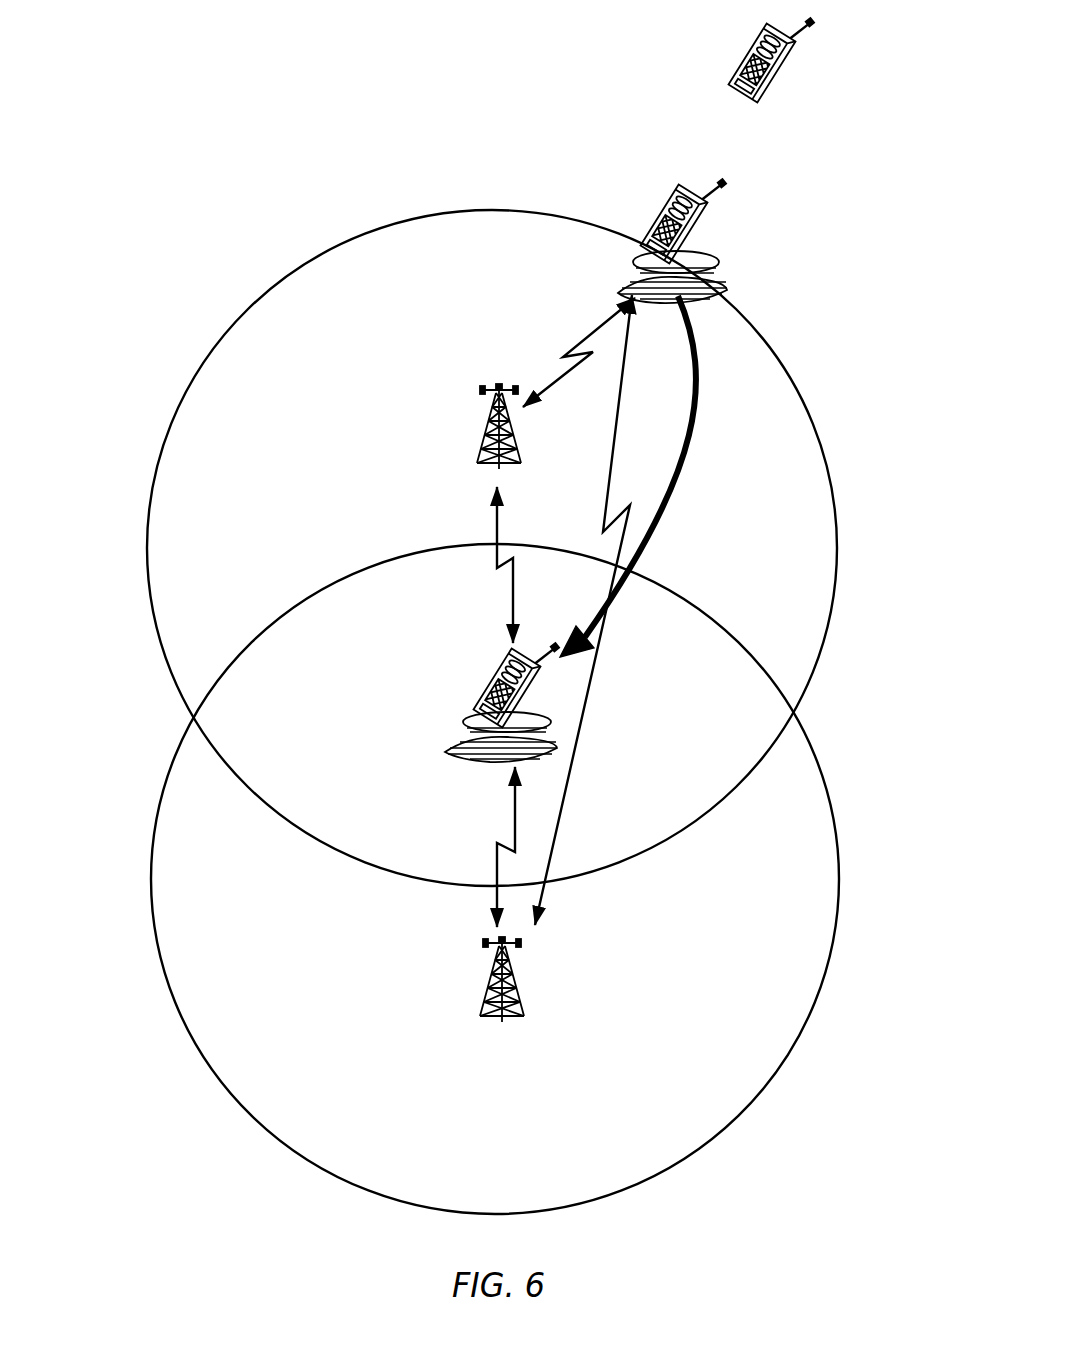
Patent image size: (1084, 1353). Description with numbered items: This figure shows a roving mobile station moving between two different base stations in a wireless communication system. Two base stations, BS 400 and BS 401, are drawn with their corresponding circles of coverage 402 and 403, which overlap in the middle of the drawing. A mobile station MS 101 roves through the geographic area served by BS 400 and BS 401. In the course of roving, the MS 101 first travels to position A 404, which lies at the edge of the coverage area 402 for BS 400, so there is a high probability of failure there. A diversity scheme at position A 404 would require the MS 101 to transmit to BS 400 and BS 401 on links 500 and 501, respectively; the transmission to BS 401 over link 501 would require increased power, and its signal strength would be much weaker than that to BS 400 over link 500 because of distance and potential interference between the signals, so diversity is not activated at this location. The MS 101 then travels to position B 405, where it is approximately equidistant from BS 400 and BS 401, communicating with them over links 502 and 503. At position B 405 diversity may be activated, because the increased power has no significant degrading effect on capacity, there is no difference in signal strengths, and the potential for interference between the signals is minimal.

The mobile station 101 is at (740, 62).
The base station 400 is at (488, 437).
The base station 401 is at (492, 973).
The circle of coverage 402 is at (296, 263).
The circle of coverage 403 is at (153, 790).
The position A 404 is at (716, 258).
The position B 405 is at (467, 733).
The link 500 is at (588, 333).
The link 501 is at (618, 396).
The link 502 is at (513, 605).
The link 503 is at (497, 860).